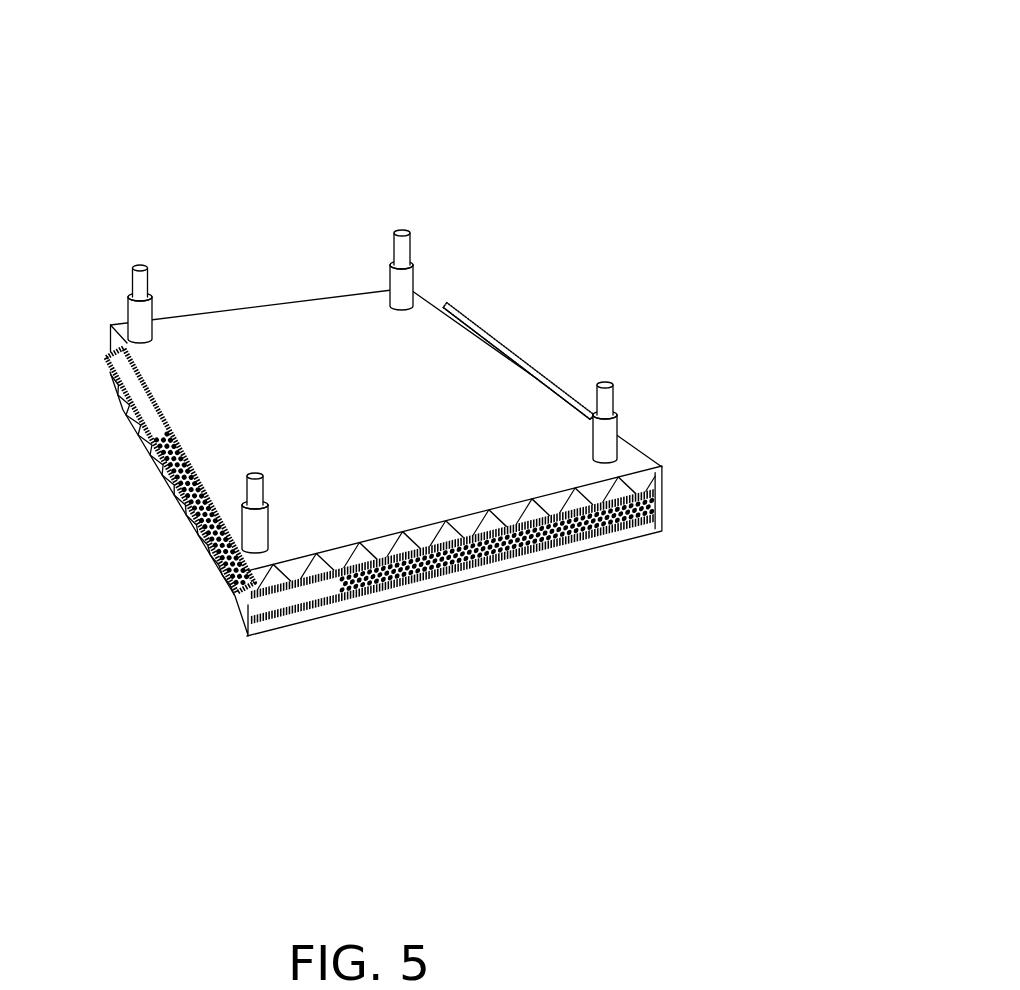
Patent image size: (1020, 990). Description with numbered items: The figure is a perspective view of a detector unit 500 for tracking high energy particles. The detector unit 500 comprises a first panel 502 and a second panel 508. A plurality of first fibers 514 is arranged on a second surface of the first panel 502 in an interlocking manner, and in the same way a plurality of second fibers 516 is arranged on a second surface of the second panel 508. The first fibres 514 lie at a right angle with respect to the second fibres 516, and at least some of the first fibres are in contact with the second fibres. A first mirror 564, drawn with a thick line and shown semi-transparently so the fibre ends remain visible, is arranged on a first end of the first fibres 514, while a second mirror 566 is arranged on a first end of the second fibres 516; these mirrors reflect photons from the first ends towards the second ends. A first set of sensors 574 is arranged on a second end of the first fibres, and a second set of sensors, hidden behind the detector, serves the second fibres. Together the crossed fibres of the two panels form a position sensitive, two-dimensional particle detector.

The detector unit 500 is at (645, 88).
The first panel 502 is at (430, 296).
The second panel 508 is at (672, 519).
The plurality of first fibers 514 is at (230, 560).
The plurality of second fibers 516 is at (452, 557).
The first mirror 564 is at (133, 392).
The second mirror 566 is at (318, 597).
The first set of sensors 574 is at (542, 368).